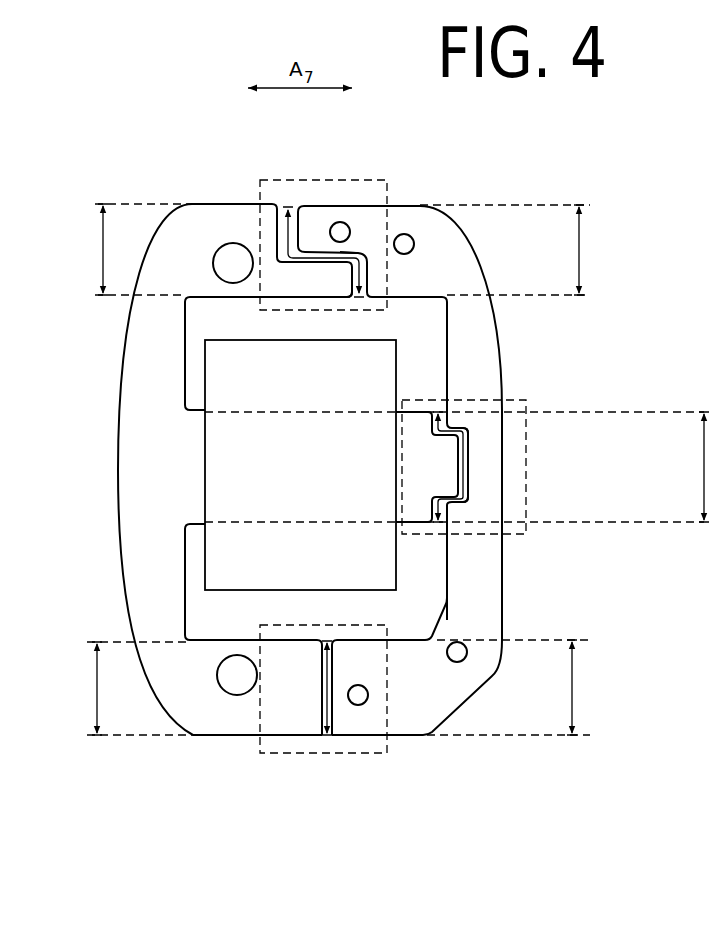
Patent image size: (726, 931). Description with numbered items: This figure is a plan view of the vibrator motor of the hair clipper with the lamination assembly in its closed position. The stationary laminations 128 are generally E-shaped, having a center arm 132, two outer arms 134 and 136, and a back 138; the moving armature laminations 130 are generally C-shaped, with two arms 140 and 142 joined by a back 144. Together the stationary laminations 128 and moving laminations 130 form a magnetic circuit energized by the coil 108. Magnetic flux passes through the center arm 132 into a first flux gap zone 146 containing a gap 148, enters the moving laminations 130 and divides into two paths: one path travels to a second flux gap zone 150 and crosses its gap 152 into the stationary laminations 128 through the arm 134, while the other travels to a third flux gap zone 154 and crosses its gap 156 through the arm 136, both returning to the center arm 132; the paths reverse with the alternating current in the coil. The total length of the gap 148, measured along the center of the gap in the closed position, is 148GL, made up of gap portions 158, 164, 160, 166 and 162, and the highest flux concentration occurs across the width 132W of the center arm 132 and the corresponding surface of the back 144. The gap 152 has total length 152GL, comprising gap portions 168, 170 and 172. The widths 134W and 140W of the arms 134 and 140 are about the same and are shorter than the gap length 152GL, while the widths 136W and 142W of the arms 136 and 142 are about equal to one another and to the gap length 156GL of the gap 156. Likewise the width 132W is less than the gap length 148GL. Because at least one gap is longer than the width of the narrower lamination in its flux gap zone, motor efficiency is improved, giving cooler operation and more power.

The coil 108 is at (218, 562).
The stationary laminations 128 is at (119, 511).
The armature laminations 130 is at (502, 601).
The center arm 132 is at (253, 470).
The outer arm 134 is at (228, 215).
The outer arm 136 is at (212, 718).
The back 138 is at (146, 561).
The arm 140 is at (435, 248).
The arm 142 is at (407, 720).
The back 144 is at (487, 621).
The first flux gap zone 146 is at (526, 471).
The gap 148 is at (468, 498).
The second flux gap zone 150 is at (279, 180).
The gap 152 is at (310, 231).
The third flux gap zone 154 is at (323, 698).
The gap 156 is at (332, 707).
The gap portion 158 is at (460, 410).
The gap portion 160 is at (487, 478).
The gap portion 162 is at (456, 526).
The gap portion 164 is at (480, 419).
The gap portion 166 is at (469, 517).
The gap portion 168 is at (350, 250).
The gap portion 170 is at (379, 275).
The gap portion 172 is at (362, 265).
The arm width 134W is at (103, 252).
The arm width 140W is at (580, 250).
The arm width 132W is at (704, 494).
The arm width 136W is at (93, 698).
The arm width 142W is at (573, 700).
The gap length 148GL is at (468, 456).
The gap length 152GL is at (368, 258).
The gap length 156GL is at (327, 736).